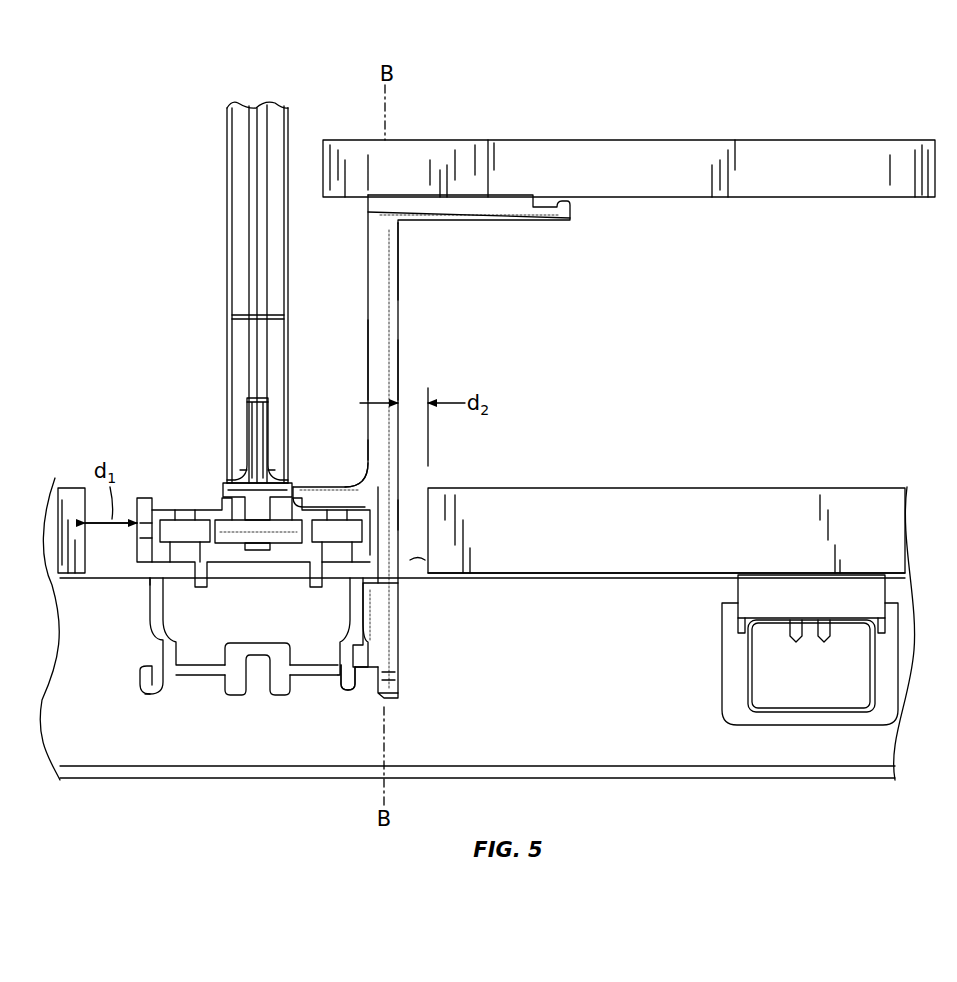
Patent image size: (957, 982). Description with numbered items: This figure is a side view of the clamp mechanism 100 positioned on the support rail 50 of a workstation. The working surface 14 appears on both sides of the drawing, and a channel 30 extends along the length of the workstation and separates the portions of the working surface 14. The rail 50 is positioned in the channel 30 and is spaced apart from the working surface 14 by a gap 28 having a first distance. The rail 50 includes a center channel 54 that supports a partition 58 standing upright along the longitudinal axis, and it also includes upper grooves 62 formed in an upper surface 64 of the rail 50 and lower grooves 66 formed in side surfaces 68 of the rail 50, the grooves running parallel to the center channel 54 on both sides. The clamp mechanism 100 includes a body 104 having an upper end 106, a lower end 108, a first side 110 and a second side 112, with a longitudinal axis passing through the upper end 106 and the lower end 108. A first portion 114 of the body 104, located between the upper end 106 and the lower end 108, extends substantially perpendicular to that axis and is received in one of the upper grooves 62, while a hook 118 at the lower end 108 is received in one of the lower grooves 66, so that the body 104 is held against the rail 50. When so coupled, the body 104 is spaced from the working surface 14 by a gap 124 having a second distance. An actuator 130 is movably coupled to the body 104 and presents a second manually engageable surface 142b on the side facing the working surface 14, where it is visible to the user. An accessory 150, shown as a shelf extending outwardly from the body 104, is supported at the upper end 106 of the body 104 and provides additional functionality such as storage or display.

The working surface 14 is at (690, 487).
The gap 28 is at (120, 542).
The channel 30 is at (425, 558).
The support rail 50 is at (200, 673).
The center channel 54 is at (240, 512).
The partition 58 is at (287, 243).
The upper grooves 62 is at (183, 507).
The upper surface 64 is at (225, 488).
The lower grooves 66 is at (160, 672).
The side surfaces 68 is at (150, 620).
The clamp mechanism 100 is at (575, 278).
The body 104 is at (400, 350).
The upper end 106 is at (400, 280).
The lower end 108 is at (398, 680).
The first side 110 is at (368, 358).
The second side 112 is at (400, 376).
The first portion 114 is at (330, 497).
The hooks 118 is at (357, 690).
The gap 124 is at (412, 512).
The actuator 130 is at (400, 483).
The second manually engageable surface 142b is at (400, 448).
The accessory 150 is at (592, 142).